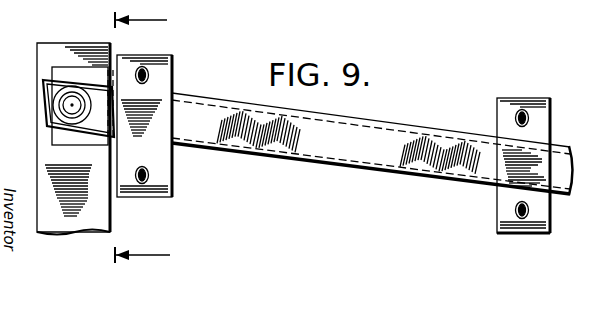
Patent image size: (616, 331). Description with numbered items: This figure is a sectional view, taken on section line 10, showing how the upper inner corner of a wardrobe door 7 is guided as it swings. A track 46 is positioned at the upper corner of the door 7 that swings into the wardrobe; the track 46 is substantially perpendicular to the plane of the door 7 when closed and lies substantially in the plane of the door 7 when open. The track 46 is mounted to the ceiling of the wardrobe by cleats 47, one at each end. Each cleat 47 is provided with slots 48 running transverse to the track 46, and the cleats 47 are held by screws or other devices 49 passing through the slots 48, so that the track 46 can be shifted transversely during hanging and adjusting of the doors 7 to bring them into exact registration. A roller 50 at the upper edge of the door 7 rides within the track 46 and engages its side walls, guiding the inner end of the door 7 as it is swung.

The door 7 is at (50, 57).
The section line 10 is at (128, 139).
The track 46 is at (422, 138).
The cleat 47 is at (160, 57).
The slot 48 is at (148, 79).
The screw 49 is at (150, 175).
The roller 50 is at (56, 99).